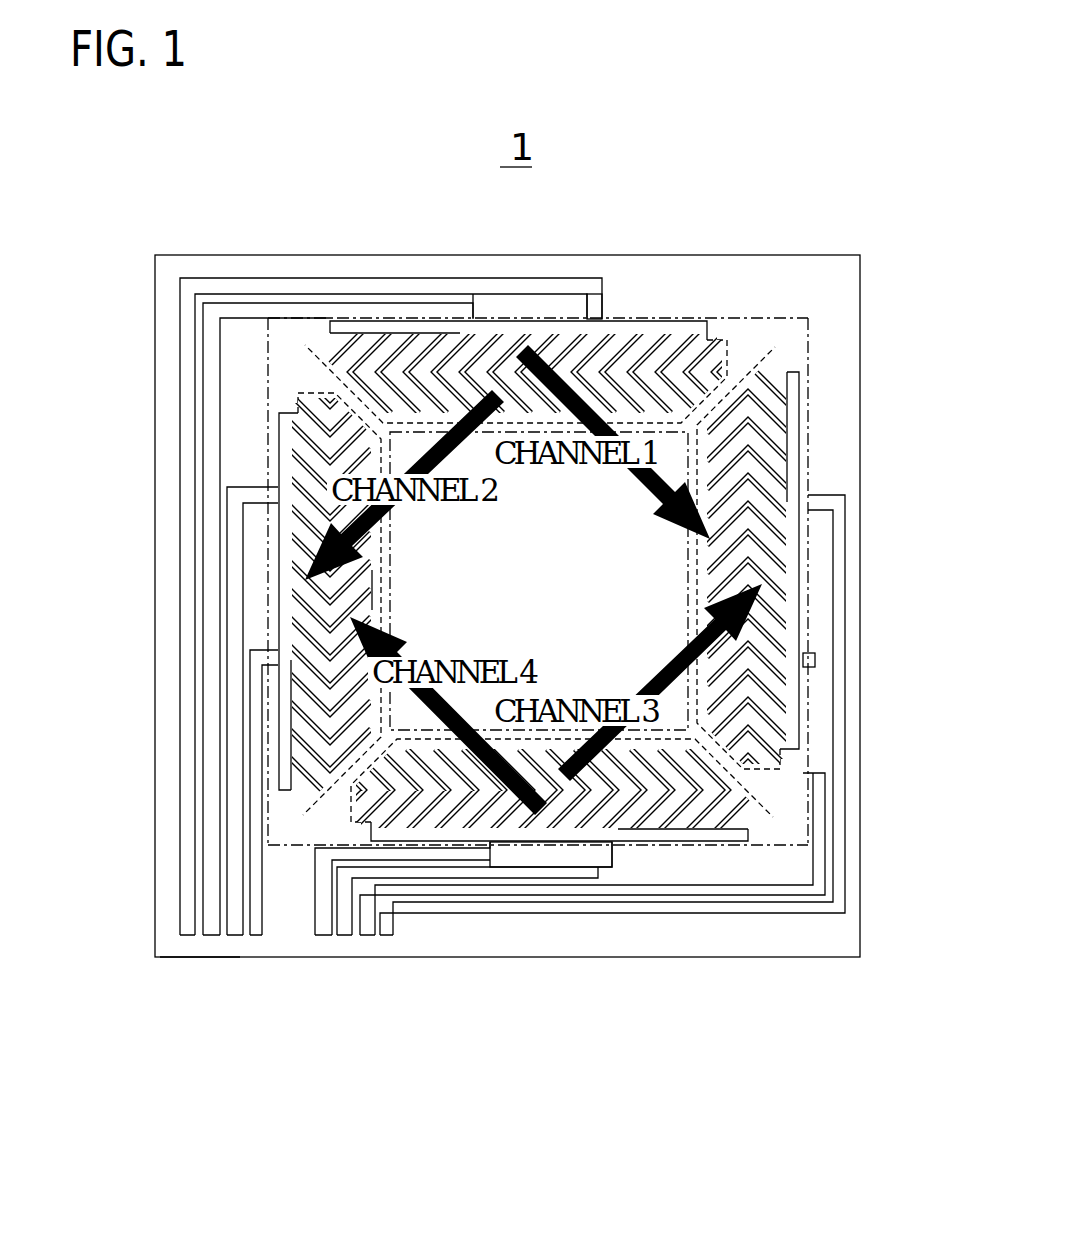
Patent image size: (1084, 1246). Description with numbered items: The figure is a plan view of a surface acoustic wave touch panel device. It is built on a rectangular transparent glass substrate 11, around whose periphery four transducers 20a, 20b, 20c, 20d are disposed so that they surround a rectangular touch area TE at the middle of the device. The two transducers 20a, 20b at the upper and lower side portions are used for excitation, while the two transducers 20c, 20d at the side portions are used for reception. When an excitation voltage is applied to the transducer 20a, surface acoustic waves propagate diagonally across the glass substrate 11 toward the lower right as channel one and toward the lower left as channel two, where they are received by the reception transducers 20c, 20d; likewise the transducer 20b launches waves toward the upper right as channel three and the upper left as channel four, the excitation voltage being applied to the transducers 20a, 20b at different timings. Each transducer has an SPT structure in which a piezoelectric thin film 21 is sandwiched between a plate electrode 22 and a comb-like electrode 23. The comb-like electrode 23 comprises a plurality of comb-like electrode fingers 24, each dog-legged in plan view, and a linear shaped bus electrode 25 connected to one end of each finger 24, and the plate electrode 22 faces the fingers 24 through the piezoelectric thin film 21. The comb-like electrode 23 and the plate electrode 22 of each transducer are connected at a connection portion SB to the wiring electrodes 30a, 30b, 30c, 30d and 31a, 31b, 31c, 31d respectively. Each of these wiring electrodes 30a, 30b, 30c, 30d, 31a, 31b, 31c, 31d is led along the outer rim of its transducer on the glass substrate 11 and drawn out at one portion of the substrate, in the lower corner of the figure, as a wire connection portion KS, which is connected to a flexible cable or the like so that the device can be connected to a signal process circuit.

The transparent glass substrate 11 is at (287, 255).
The transducer 20a is at (647, 306).
The transducer 20b is at (690, 860).
The transducer 20c is at (258, 398).
The transducer 20d is at (822, 428).
The piezoelectric thin film 21 is at (706, 320).
The plate electrode 22 is at (380, 629).
The comb-like electrode 23 is at (384, 568).
The comb-like electrode fingers 24 is at (372, 604).
The bus electrode 25 is at (280, 596).
The wiring electrode 30a is at (190, 797).
The wiring electrode 30b is at (410, 853).
The wiring electrode 30c is at (235, 890).
The wiring electrode 30d is at (545, 890).
The wiring electrode 31a is at (212, 850).
The wiring electrode 31b is at (460, 872).
The wiring electrode 31c is at (255, 918).
The wiring electrode 31d is at (593, 907).
The connection portion SB is at (470, 335).
The wire connection portion KS is at (206, 975).
The touch area TE is at (568, 610).